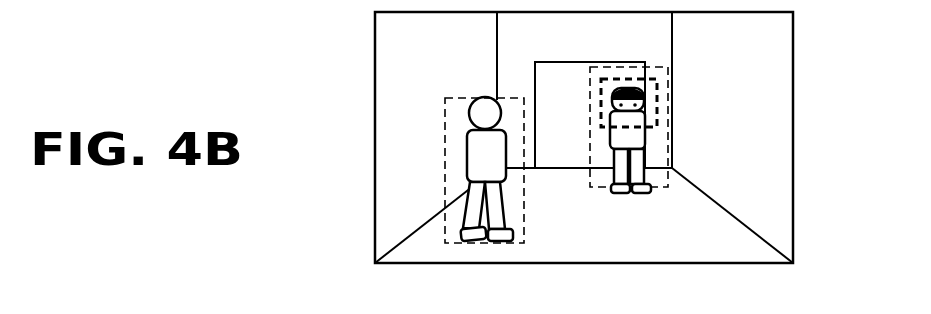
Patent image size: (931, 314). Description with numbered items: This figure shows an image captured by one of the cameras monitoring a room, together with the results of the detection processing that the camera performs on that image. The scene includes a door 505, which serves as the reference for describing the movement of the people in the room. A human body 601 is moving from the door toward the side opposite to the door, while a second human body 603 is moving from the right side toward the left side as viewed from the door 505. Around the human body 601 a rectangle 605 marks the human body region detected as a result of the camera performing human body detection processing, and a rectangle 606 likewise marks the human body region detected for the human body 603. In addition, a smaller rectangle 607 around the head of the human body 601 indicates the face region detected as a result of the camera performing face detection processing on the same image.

The door 505 is at (577, 62).
The human body 601 is at (647, 135).
The human body 603 is at (467, 162).
The rectangle 605 is at (668, 155).
The rectangle 606 is at (525, 218).
The rectangle 607 is at (660, 86).